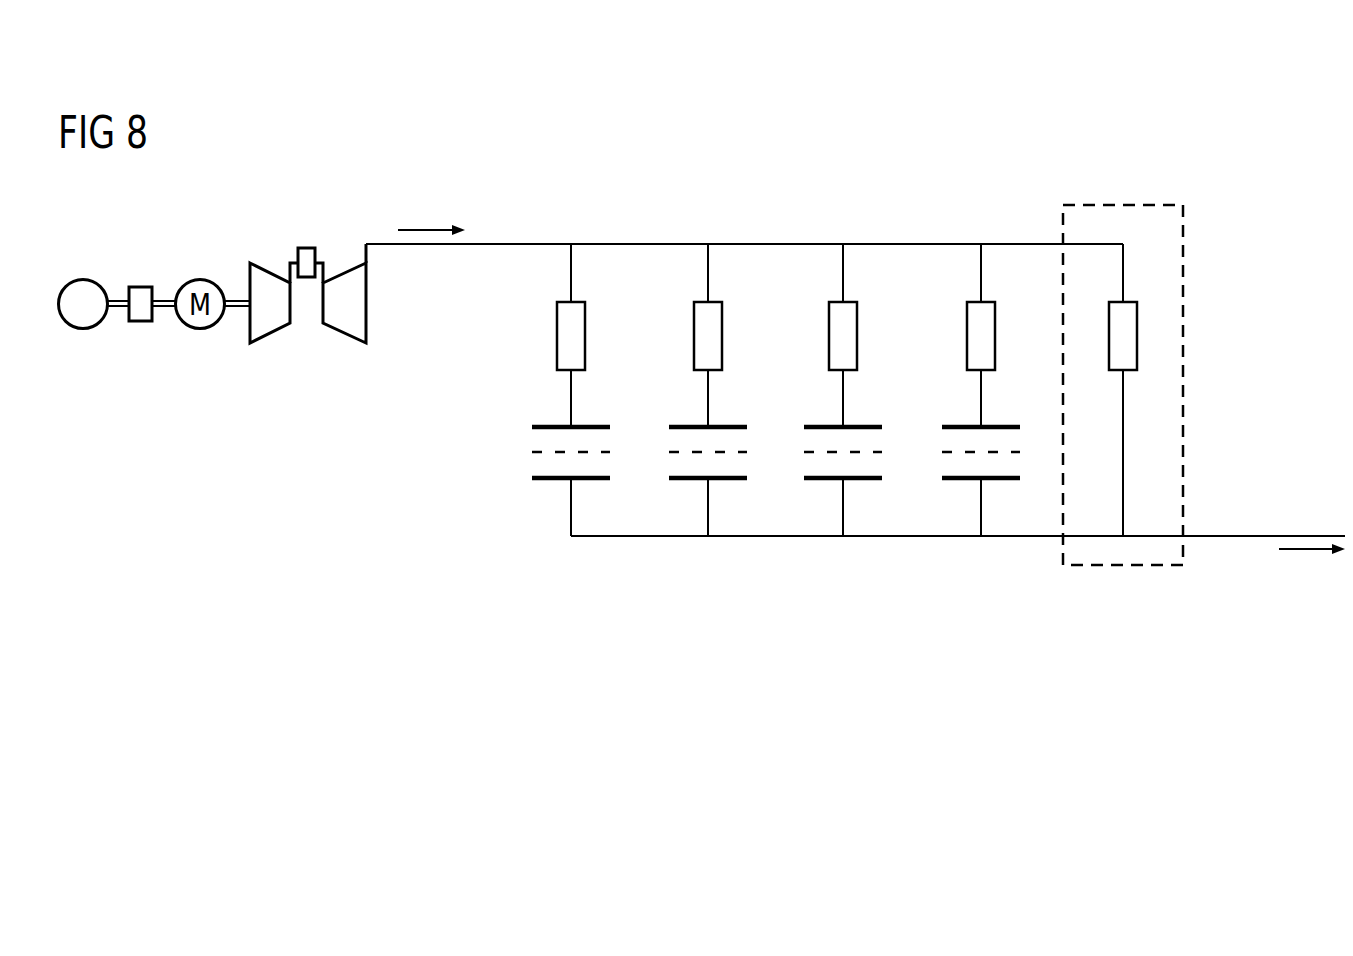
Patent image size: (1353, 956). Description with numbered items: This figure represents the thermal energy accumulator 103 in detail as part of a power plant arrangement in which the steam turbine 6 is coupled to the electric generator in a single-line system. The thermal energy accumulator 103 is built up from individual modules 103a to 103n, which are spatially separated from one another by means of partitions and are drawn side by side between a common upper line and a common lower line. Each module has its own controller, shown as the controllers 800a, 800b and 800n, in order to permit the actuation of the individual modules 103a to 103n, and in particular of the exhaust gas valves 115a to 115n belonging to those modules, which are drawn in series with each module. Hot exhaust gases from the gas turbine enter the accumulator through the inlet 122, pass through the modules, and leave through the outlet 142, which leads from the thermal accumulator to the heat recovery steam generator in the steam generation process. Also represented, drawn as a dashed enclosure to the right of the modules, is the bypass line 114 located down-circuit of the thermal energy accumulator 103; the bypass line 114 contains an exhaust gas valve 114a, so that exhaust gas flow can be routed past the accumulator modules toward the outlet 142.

The steam turbine 6 is at (305, 348).
The inlet 122 is at (421, 230).
The thermal energy accumulator 103 is at (803, 188).
The controller 800a is at (530, 387).
The controller 800b is at (704, 300).
The controller 800n is at (948, 385).
The exhaust gas valve 115a is at (557, 338).
The exhaust gas valve 115n is at (967, 338).
The module 103a is at (549, 478).
The module 103n is at (1000, 478).
The bypass line 114 is at (1165, 342).
The exhaust gas valve 114a is at (1137, 336).
The outlet 142 is at (1303, 560).